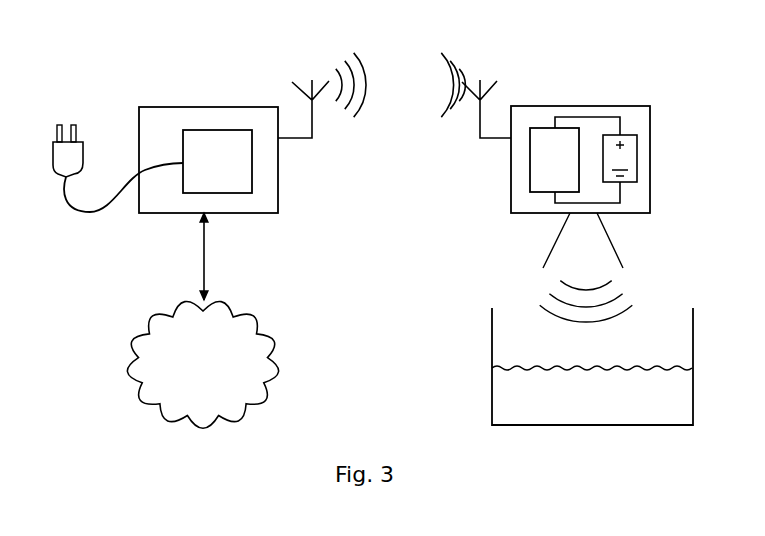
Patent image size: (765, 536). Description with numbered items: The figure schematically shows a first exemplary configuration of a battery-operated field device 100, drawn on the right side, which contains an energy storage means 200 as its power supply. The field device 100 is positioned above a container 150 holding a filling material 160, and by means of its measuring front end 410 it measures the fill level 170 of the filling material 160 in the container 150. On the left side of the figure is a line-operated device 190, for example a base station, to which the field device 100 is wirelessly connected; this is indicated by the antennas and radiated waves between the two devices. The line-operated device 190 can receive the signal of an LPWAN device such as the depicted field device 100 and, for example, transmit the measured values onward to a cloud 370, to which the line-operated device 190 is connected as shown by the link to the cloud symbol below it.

The field device 100 is at (633, 94).
The line-operated device 190 is at (118, 117).
The cloud 370 is at (218, 376).
The energy storage means 200 is at (634, 172).
The measuring front end 410 is at (549, 226).
The container 150 is at (510, 328).
The filling material 160 is at (510, 391).
The fill level 170 is at (645, 368).